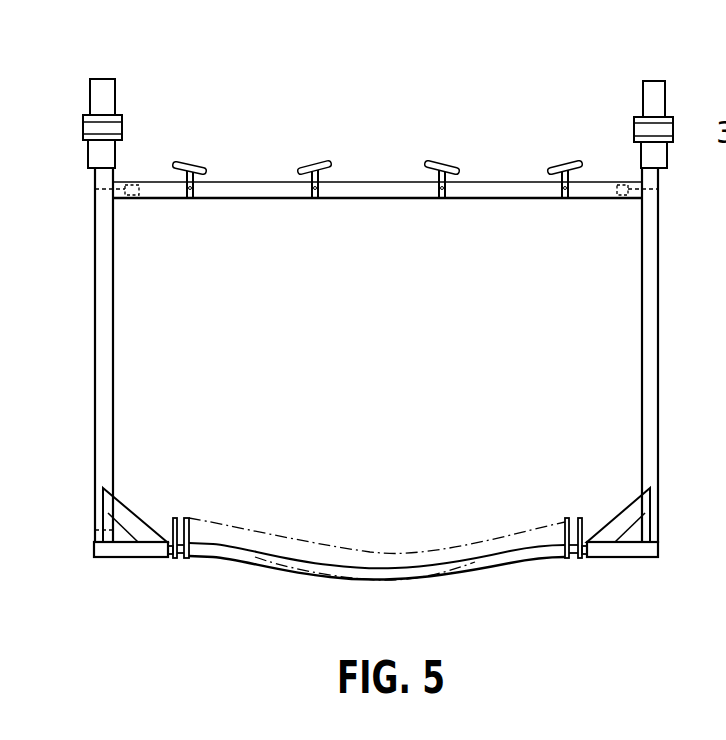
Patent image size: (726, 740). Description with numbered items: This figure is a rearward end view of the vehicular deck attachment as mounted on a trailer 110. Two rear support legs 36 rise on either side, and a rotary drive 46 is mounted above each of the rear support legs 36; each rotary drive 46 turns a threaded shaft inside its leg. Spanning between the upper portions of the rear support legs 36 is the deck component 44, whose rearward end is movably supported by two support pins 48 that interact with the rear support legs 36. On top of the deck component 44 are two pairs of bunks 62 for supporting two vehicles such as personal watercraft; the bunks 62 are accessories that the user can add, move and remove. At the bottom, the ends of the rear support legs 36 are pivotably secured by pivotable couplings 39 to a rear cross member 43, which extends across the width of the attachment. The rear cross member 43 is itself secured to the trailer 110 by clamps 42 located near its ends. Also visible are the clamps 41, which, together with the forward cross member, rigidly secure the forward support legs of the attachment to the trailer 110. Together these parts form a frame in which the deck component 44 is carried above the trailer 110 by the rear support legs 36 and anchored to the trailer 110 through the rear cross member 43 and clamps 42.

The rear support legs 36 is at (102, 325).
The pivotable couplings 39 is at (110, 523).
The clamps 41 is at (95, 542).
The clamps 42 is at (571, 560).
The rear cross member 43 is at (523, 560).
The deck component 44 is at (400, 198).
The rotary drive 46 is at (102, 93).
The support pins 48 is at (102, 190).
The bunks 62 is at (314, 163).
The trailer 110 is at (465, 527).